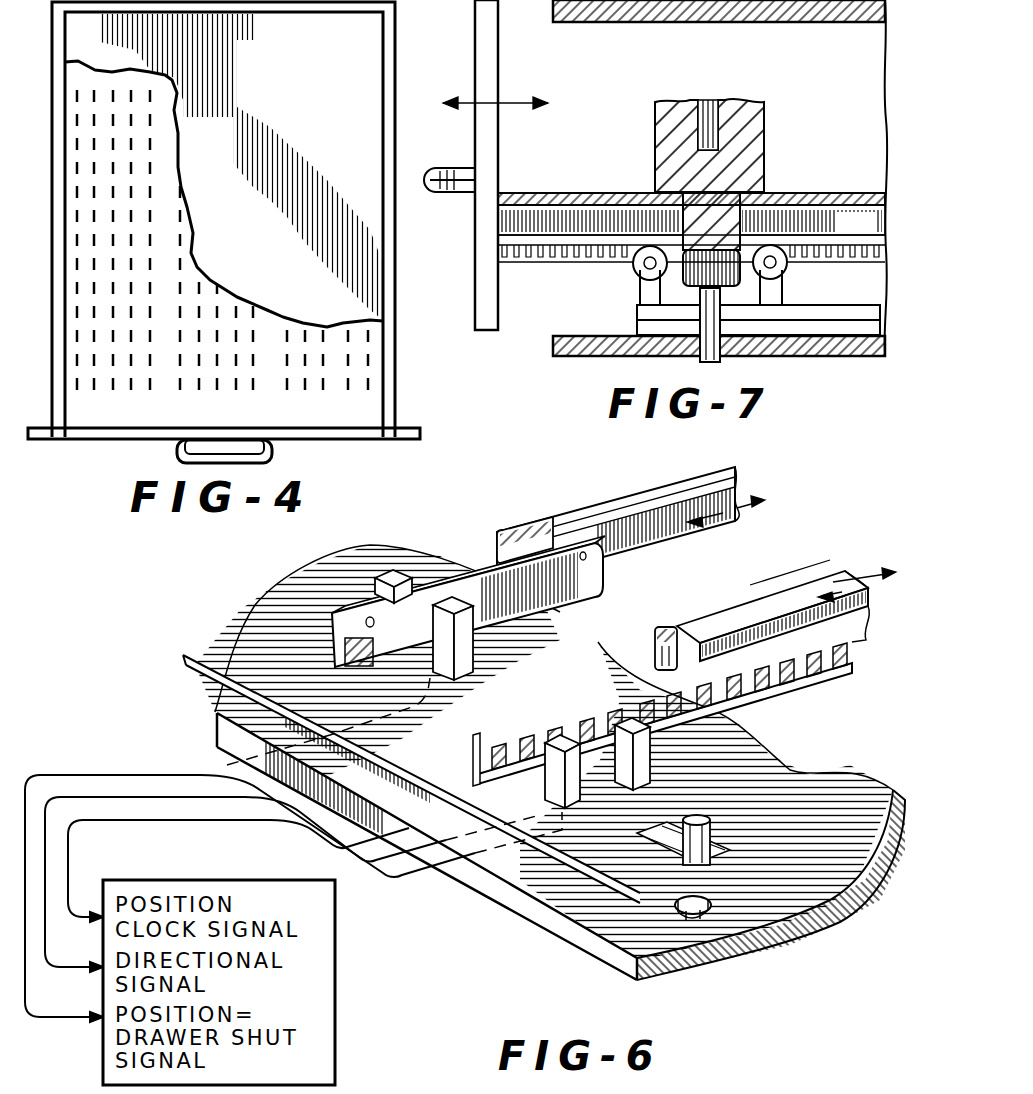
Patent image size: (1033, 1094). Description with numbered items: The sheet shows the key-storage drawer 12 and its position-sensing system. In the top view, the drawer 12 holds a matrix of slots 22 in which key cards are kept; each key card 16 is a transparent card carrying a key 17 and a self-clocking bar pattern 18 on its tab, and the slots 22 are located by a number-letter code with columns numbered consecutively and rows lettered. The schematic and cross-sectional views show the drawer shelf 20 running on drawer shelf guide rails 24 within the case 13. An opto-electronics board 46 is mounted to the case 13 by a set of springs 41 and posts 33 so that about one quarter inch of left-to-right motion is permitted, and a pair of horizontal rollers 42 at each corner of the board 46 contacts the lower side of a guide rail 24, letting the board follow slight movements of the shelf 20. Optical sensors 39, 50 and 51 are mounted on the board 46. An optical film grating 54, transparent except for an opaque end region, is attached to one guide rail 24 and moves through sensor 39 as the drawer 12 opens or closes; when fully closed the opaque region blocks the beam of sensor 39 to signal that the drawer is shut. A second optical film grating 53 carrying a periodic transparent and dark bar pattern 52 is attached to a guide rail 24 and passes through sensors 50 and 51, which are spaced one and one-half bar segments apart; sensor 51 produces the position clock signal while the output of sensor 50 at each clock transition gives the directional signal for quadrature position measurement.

In FIG. 7, the drawer 12 is at (412, 88).
In FIG. 7, the case 13 is at (624, 23).
In FIG. 6, the case 13 is at (806, 938).
In FIG. 7, the key card 16 is at (662, 112).
In FIG. 7, the key 17 is at (712, 100).
In FIG. 7, the self-clocking bar pattern 18 is at (704, 235).
In FIG. 4, the drawer shelf 20 is at (180, 113).
In FIG. 7, the drawer shelf 20 is at (552, 193).
In FIG. 4, the slots 22 is at (222, 305).
In FIG. 7, the drawer shelf guide rail 24 is at (806, 200).
In FIG. 7, the posts 33 is at (685, 300).
In FIG. 6, the optical sensor 39 is at (396, 570).
In FIG. 7, the springs 41 is at (730, 340).
In FIG. 6, the springs 41 is at (712, 900).
In FIG. 7, the horizontal rollers 42 is at (787, 268).
In FIG. 7, the opto-electronics board 46 is at (840, 306).
In FIG. 6, the opto-electronics board 46 is at (330, 580).
In FIG. 6, the optical sensor 50 is at (548, 802).
In FIG. 6, the optical sensor 51 is at (652, 758).
In FIG. 7, the bar pattern 52 is at (520, 250).
In FIG. 6, the bar pattern 52 is at (662, 714).
In FIG. 7, the optical film grating 53 is at (832, 242).
In FIG. 6, the optical film grating 53 is at (801, 678).
In FIG. 6, the optical film grating 54 is at (486, 582).